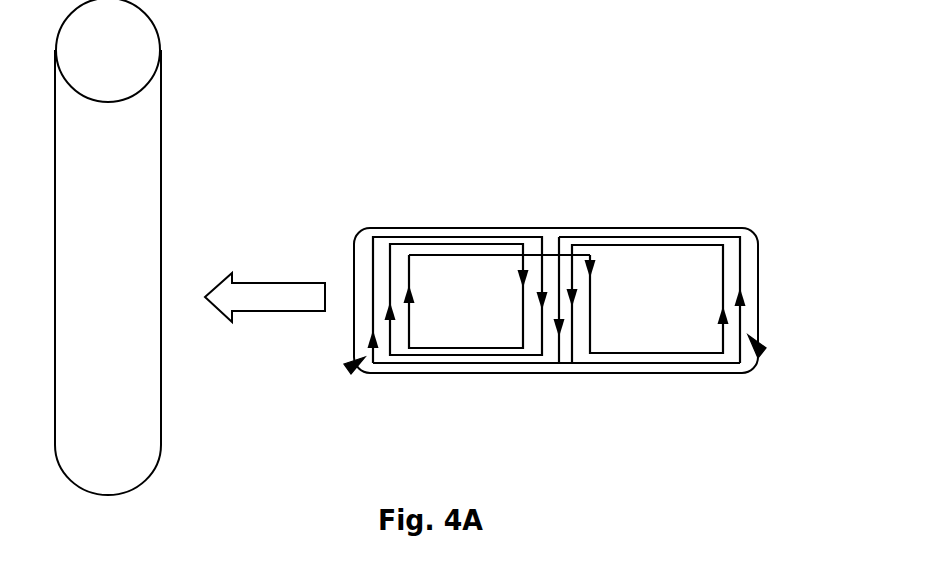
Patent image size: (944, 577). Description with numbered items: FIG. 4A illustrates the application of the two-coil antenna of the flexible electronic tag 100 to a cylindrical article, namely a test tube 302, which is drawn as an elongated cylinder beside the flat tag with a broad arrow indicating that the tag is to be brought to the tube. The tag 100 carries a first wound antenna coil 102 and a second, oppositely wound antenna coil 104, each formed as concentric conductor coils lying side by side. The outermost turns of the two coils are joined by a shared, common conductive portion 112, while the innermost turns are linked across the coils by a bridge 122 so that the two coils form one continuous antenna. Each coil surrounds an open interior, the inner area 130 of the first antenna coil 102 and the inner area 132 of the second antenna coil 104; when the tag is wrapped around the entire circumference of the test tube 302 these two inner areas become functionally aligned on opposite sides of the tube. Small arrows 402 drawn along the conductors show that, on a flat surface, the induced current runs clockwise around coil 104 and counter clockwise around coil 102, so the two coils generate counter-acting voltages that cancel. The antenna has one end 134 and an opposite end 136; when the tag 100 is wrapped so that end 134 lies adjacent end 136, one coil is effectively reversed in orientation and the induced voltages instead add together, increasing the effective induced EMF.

The electronic tag 100 is at (759, 236).
The first wound antenna coil 102 is at (640, 238).
The second oppositely wound antenna coil 104 is at (453, 243).
The common conductive portion 112 is at (560, 358).
The bridge 122 is at (549, 254).
The inner area of first antenna coil 130 is at (662, 312).
The inner area of second antenna coil 132 is at (472, 312).
The one end of the antenna 134 is at (760, 352).
The other end of the antenna 136 is at (348, 369).
The test tube 302 is at (165, 90).
The arrows 402 is at (746, 294).